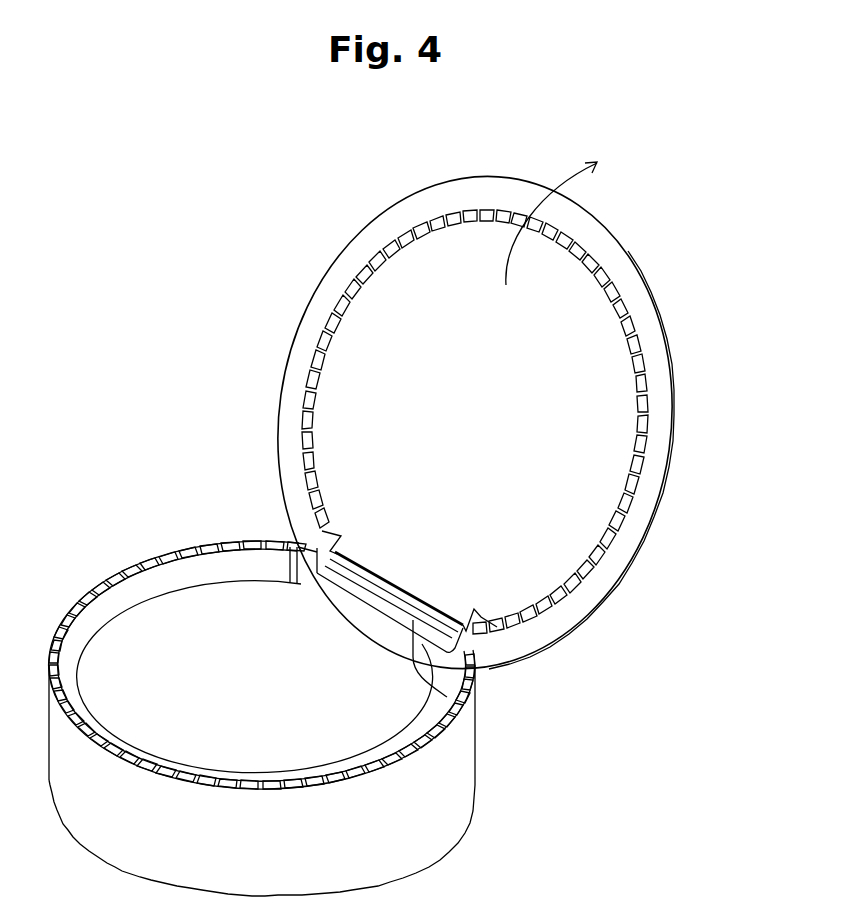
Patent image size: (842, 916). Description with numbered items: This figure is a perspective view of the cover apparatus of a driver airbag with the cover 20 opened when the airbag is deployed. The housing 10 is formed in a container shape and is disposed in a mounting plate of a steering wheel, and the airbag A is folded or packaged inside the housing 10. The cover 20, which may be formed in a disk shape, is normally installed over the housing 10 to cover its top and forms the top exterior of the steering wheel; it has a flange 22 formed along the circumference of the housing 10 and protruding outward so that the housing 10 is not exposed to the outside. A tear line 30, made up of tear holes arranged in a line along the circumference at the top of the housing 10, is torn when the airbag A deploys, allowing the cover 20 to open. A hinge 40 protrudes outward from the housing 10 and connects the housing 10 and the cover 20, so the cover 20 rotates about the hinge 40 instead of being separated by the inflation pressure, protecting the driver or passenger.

The housing 10 is at (440, 823).
The cover 20 is at (660, 284).
The flange 22 is at (653, 375).
The tear line 30 is at (540, 617).
The hinge 40 is at (470, 684).
The airbag A is at (167, 588).